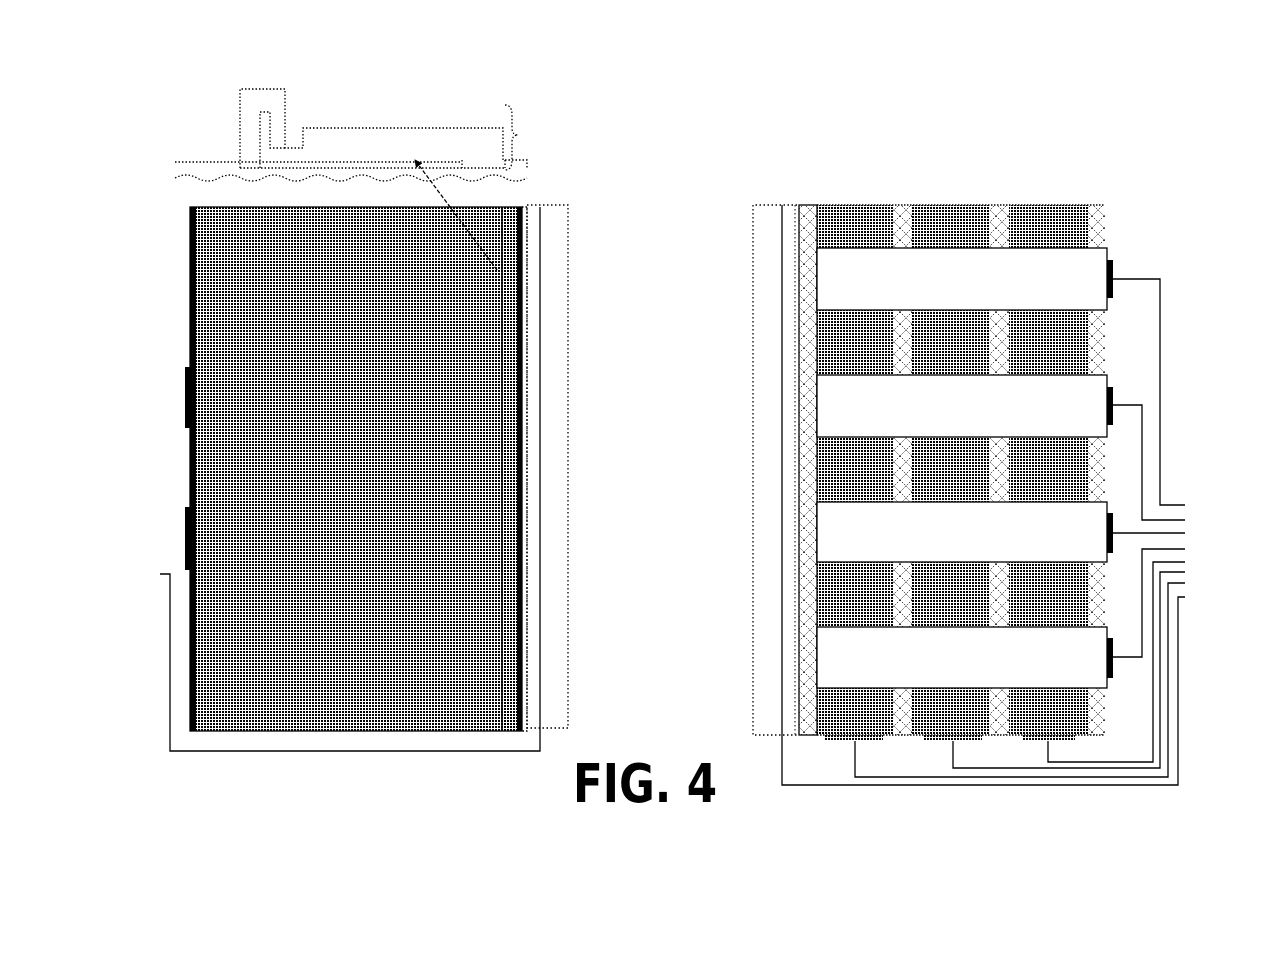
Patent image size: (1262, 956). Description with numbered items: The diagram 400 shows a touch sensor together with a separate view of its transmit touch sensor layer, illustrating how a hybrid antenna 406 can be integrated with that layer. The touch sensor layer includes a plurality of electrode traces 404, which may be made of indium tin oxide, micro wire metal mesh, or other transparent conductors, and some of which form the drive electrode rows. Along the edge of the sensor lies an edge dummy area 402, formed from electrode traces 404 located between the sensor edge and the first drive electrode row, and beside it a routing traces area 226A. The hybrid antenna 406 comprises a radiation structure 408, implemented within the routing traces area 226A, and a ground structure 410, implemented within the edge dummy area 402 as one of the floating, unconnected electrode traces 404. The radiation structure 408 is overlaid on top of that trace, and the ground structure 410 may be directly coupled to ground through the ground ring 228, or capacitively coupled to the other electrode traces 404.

The diagram 400 is at (1179, 124).
The edge dummy area 402 is at (522, 572).
The electrode traces 404 is at (532, 196).
The hybrid antenna 406 is at (230, 98).
The radiation structure 408 is at (528, 137).
The ground structure 410 is at (528, 172).
The routing traces area 226A is at (568, 420).
The ground ring 228 is at (462, 752).